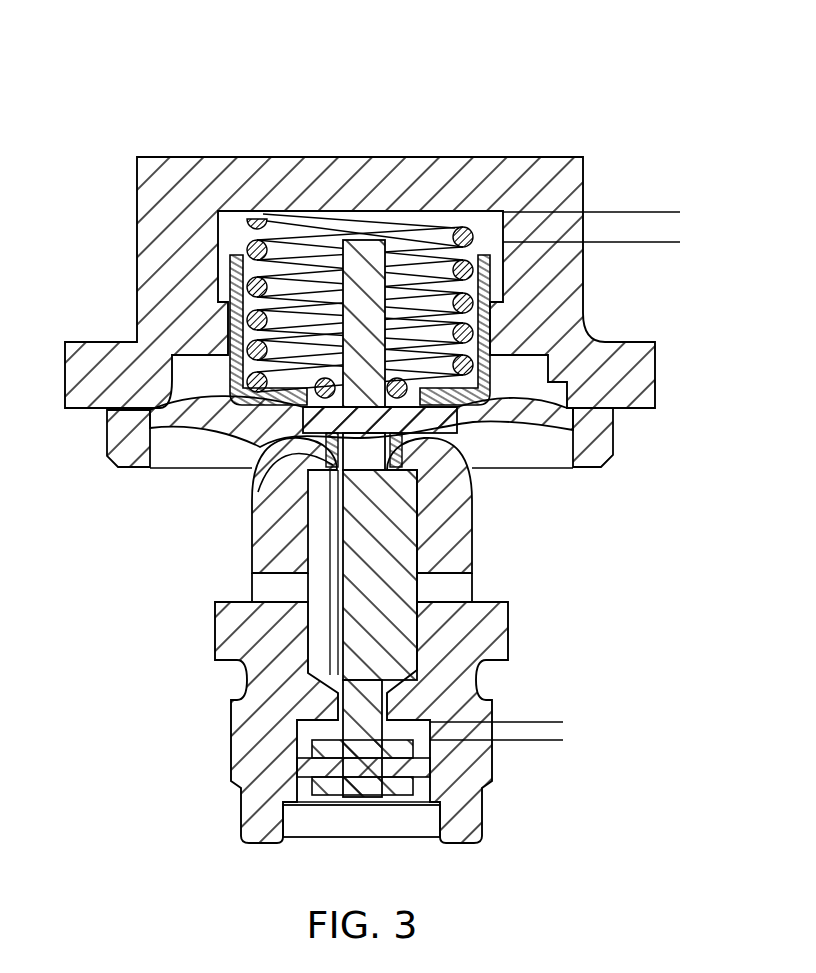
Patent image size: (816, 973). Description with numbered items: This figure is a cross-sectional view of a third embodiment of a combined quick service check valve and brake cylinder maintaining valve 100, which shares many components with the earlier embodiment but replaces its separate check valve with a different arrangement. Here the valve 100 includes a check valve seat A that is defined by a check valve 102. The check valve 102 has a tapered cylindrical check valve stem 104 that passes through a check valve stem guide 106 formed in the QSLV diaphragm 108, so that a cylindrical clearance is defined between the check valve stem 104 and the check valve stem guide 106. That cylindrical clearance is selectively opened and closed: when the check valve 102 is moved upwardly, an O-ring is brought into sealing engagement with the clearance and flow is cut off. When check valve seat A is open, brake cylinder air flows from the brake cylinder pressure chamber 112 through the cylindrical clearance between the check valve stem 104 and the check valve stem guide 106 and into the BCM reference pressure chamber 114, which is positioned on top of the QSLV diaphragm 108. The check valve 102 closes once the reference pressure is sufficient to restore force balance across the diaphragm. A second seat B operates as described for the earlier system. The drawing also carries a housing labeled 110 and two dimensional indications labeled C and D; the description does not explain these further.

The combined quick service check valve and brake cylinder maintaining valve 100 is at (329, 78).
The check valve 102 is at (450, 464).
The check valve stem 104 is at (244, 346).
The check valve stem guide 106 is at (310, 460).
The QSLV diaphragm 108 is at (108, 424).
The cap housing 110 is at (238, 371).
The brake cylinder pressure chamber 112 is at (322, 530).
The BCM reference pressure chamber 114 is at (233, 233).
The check valve seat A is at (395, 397).
The second seat B is at (306, 714).
The dimension C is at (553, 770).
The dimension D is at (670, 270).